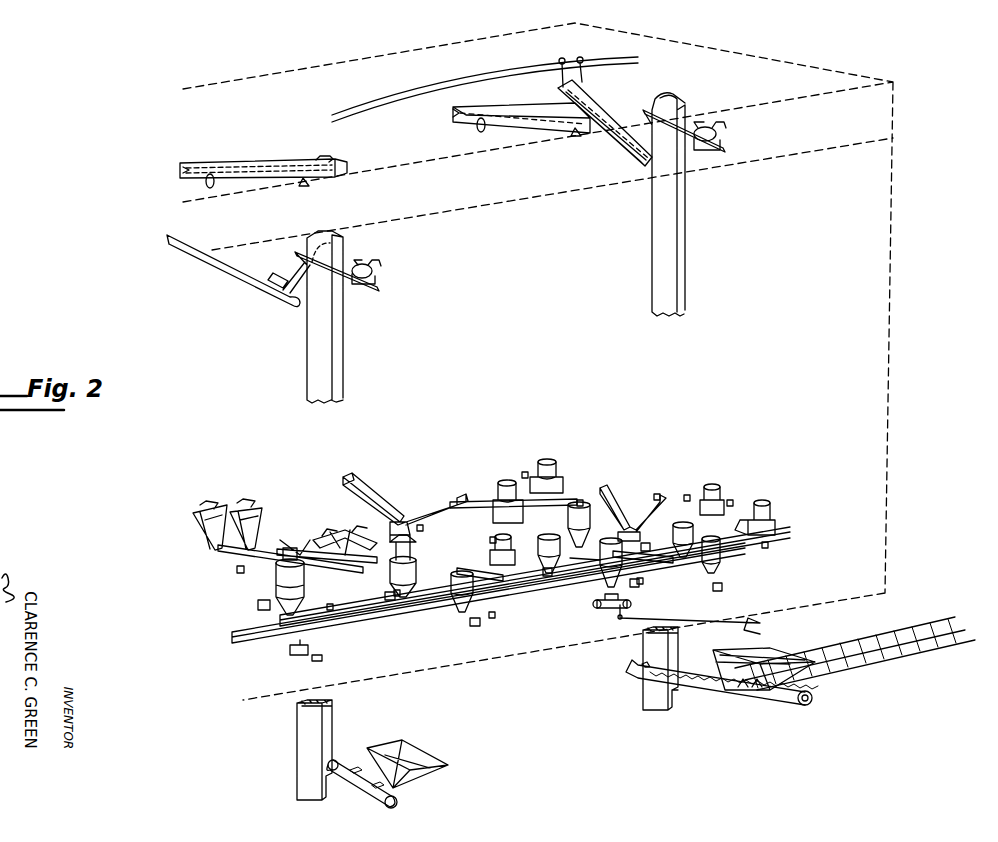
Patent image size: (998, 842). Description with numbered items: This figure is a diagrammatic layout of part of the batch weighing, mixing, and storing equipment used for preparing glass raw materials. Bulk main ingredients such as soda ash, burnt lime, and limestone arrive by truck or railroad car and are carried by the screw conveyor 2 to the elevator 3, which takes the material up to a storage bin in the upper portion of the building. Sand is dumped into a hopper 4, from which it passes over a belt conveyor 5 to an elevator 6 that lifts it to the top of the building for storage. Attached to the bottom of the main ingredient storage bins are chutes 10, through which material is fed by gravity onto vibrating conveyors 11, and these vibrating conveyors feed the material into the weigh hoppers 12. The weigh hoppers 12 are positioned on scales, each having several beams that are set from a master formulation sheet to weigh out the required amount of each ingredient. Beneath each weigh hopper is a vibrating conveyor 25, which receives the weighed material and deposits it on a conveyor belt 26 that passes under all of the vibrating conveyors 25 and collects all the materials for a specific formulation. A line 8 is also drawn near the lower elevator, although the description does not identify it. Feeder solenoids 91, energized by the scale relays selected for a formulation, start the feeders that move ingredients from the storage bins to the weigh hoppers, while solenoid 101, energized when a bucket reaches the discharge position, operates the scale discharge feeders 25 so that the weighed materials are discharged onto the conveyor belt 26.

The screw conveyor 2 is at (733, 693).
The elevator 3 is at (680, 240).
The hopper 4 is at (430, 770).
The belt conveyor 5 is at (363, 777).
The elevator 6 is at (340, 365).
The supply line 8 is at (689, 623).
The chute 10 is at (220, 510).
The vibrating conveyor 11 is at (308, 548).
The weigh hopper 12 is at (300, 580).
The vibrating conveyor 25 is at (270, 610).
The conveyor belt 26 is at (357, 615).
The feeder solenoid 91 is at (240, 570).
The solenoid 101 is at (323, 610).